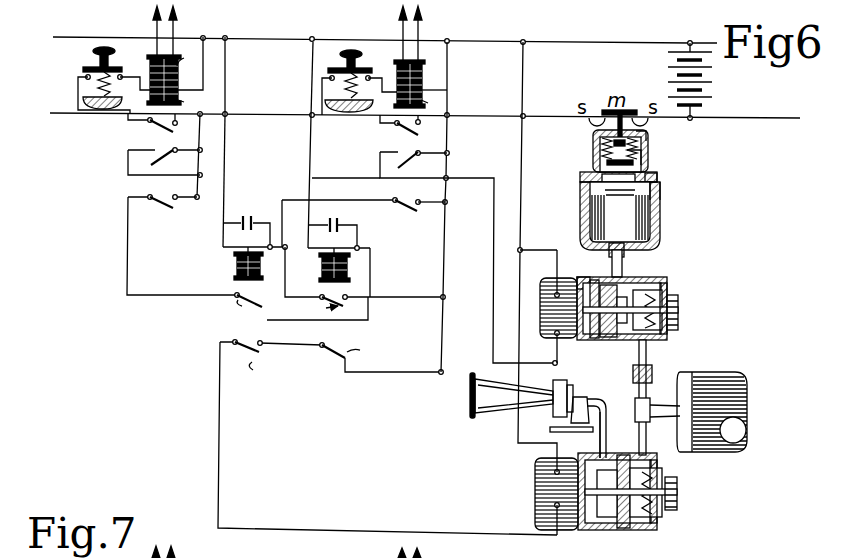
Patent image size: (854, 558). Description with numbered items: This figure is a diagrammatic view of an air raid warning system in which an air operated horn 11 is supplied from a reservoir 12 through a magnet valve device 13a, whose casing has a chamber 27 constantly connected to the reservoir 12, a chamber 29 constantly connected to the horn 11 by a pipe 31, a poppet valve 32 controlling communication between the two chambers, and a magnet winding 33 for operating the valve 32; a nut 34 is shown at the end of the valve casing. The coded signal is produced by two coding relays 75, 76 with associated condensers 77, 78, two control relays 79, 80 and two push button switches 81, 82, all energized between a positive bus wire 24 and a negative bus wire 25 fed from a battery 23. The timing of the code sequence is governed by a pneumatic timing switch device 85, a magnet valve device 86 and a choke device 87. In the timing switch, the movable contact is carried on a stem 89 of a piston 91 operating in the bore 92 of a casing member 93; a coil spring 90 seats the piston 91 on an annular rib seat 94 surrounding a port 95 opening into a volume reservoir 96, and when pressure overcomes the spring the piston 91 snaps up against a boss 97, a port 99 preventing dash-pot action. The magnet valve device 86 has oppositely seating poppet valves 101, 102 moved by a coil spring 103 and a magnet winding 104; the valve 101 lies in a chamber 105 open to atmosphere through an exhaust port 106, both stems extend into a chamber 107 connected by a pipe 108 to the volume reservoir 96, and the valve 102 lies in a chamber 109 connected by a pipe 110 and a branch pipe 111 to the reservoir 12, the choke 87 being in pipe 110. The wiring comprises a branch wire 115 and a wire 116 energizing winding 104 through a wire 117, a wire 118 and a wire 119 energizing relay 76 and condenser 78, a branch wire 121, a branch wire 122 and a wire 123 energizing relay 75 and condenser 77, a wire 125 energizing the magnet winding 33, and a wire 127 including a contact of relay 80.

The air operated horn 11 is at (468, 398).
The reservoir 12 is at (731, 372).
The magnet valve device 13a is at (536, 463).
The battery 23 is at (703, 80).
The positive bus wire 24 is at (50, 114).
The negative bus wire 25 is at (100, 36).
The chamber 27 is at (660, 530).
The chamber 29 is at (605, 512).
The pipe 31 is at (602, 437).
The valve 32 is at (639, 436).
The magnet winding 33 is at (538, 490).
The adjusting nut 34 is at (677, 498).
The coding relay 75 is at (234, 268).
The coding relay 76 is at (320, 266).
The electrical condenser 77 is at (240, 219).
The electrical condenser 78 is at (339, 222).
The control relay 79 is at (150, 72).
The control relay 80 is at (395, 72).
The push button switch 81 is at (93, 53).
The push button switch 82 is at (372, 32).
The pneumatic timing switch device 85 is at (594, 147).
The magnet valve device 86 is at (555, 279).
The choke device 87 is at (634, 388).
The stem 89 is at (648, 158).
The coil spring 90 is at (588, 179).
The piston 91 is at (658, 181).
The bore 92 is at (657, 177).
The casing member 93 is at (600, 163).
The annular rib seat 94 is at (661, 184).
The port 95 is at (618, 193).
The volume reservoir 96 is at (590, 208).
The boss 97 is at (639, 143).
The port 99 is at (648, 140).
The poppet valve 101 is at (593, 352).
The poppet valve 102 is at (662, 280).
The coil spring 103 is at (678, 320).
The magnet winding 104 is at (540, 310).
The chamber 105 is at (570, 277).
The exhaust port 106 is at (596, 285).
The chamber 107 is at (604, 341).
The pipe 108 is at (623, 266).
The chamber 109 is at (665, 293).
The pipe 110 is at (646, 437).
The branch pipe 111 is at (673, 398).
The branch wire 115 is at (200, 132).
The wire 116 is at (237, 158).
The wire 117 is at (523, 73).
The wire 118 is at (127, 240).
The wire 119 is at (312, 101).
The branch wire 121 is at (447, 142).
The branch wire 122 is at (262, 300).
The wire 123 is at (226, 70).
The wire 125 is at (377, 528).
The wire 127 is at (385, 200).